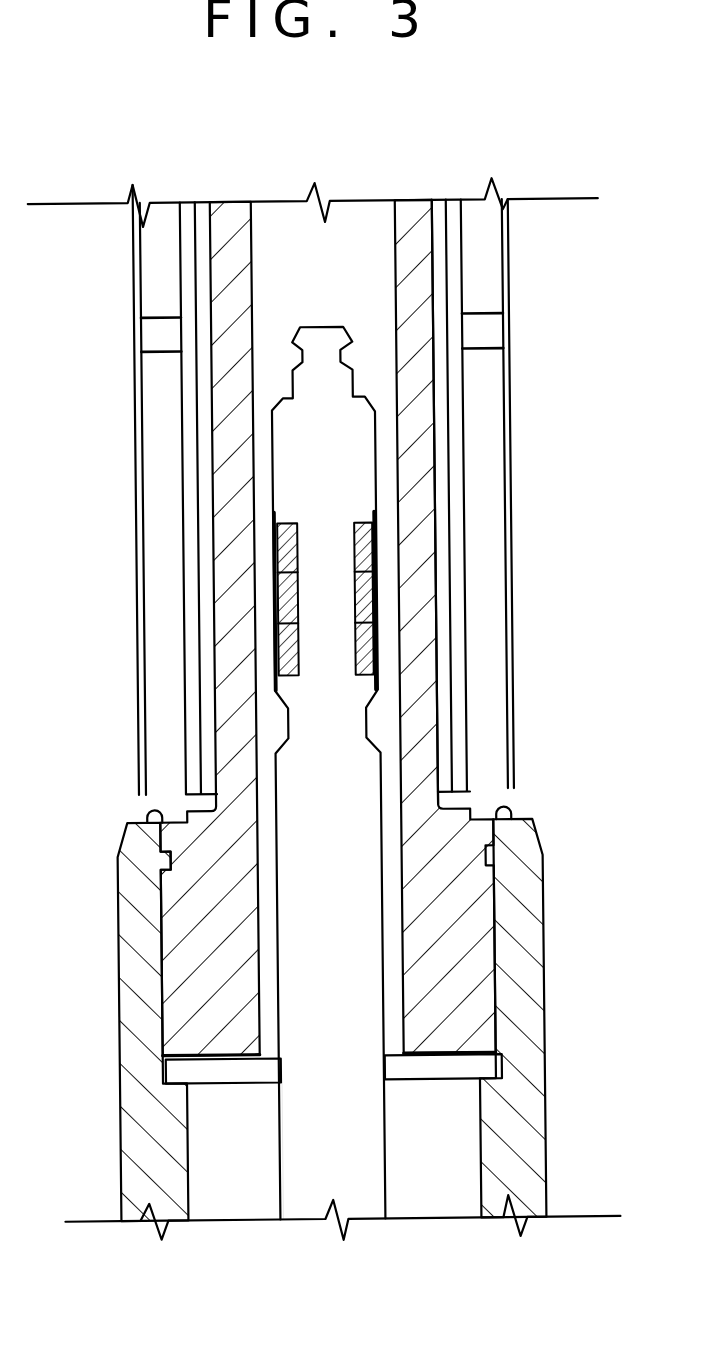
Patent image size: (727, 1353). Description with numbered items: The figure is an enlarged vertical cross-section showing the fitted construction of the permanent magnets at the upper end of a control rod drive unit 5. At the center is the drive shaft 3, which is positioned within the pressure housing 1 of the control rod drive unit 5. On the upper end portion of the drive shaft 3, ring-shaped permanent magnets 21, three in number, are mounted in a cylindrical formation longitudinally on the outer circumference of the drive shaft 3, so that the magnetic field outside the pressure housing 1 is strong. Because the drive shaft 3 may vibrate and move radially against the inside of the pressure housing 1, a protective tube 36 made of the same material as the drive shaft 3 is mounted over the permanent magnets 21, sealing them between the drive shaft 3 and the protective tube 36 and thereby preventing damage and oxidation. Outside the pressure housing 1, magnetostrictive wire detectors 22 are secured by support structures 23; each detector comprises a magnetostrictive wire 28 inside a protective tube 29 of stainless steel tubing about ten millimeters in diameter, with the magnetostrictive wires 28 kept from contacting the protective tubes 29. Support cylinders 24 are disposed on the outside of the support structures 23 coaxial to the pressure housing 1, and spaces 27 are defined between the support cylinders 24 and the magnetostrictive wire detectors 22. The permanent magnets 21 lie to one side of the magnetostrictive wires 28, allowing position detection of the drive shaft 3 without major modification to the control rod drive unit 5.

The pressure housing 1 is at (437, 497).
The drive shaft 3 is at (387, 890).
The control rod drive unit 5 is at (550, 1128).
The permanent magnets 21 is at (378, 652).
The magnetostrictive wire detectors 22 is at (462, 273).
The support structures 23 is at (477, 350).
The support cylinders 24 is at (508, 297).
The spaces 27 is at (160, 490).
The magnetostrictive wires 28 is at (450, 450).
The protective tubes 29 is at (473, 208).
The protective tube 36 is at (378, 552).